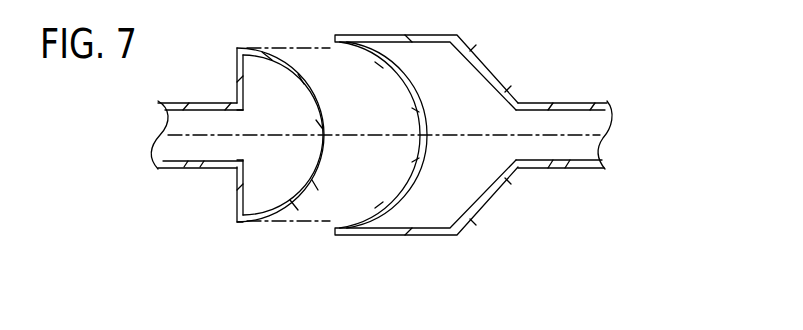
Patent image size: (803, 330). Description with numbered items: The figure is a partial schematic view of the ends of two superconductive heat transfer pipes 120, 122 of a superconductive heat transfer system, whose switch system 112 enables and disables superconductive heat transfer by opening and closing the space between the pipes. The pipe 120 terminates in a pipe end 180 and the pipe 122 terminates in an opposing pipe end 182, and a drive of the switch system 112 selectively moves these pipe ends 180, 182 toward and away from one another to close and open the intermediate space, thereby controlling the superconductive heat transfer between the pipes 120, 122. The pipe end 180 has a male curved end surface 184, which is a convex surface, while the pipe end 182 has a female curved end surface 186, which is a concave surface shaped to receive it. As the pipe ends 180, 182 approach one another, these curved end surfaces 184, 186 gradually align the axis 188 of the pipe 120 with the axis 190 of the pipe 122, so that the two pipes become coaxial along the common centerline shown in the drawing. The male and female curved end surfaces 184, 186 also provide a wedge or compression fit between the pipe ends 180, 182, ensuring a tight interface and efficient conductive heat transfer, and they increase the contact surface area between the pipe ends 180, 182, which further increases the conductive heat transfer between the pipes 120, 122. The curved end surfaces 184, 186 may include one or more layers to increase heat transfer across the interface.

The superconductive heat transfer pipe 120 is at (160, 126).
The axis of the pipe 188 is at (207, 132).
The switch system 112 is at (240, 233).
The pipe end 180 is at (214, 192).
The male curved end surface 184 is at (280, 58).
The pipe end 182 is at (483, 227).
The female curved end surface 186 is at (420, 131).
The superconductive heat transfer pipe 122 is at (608, 135).
The axis of the pipe 190 is at (548, 133).